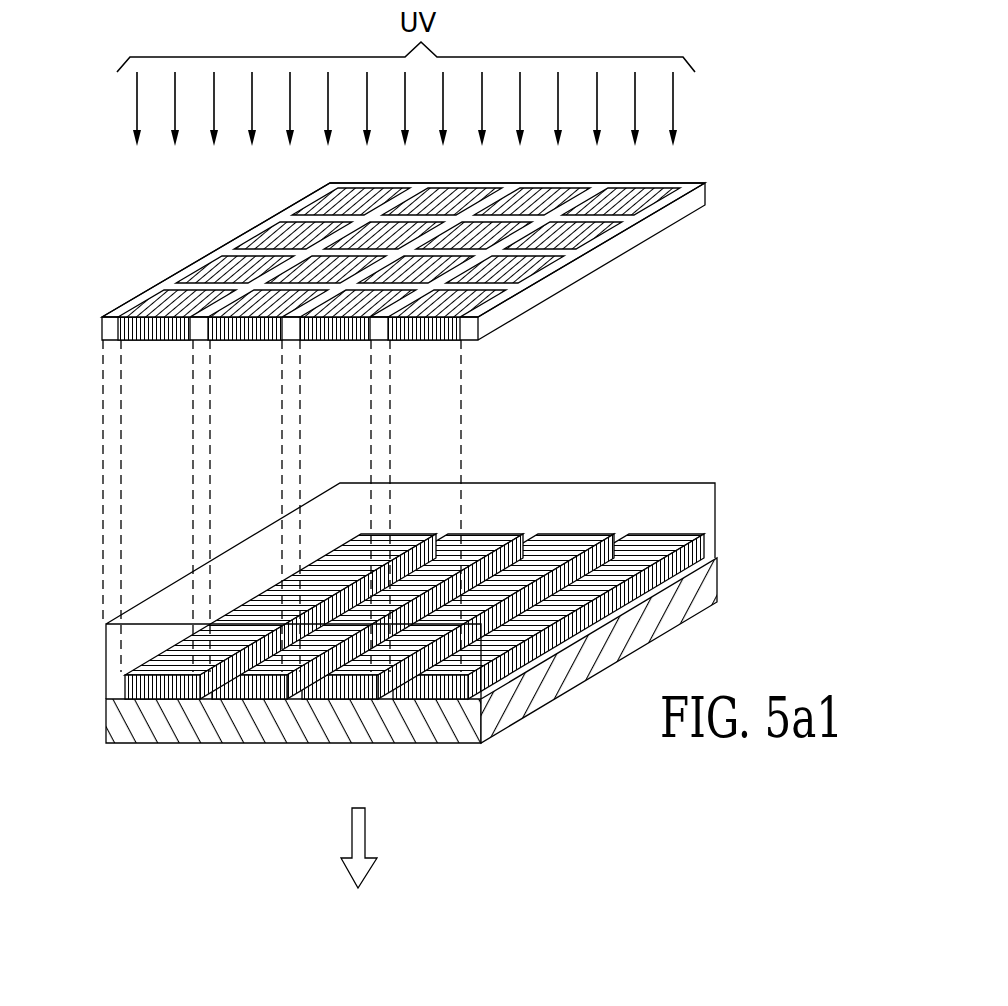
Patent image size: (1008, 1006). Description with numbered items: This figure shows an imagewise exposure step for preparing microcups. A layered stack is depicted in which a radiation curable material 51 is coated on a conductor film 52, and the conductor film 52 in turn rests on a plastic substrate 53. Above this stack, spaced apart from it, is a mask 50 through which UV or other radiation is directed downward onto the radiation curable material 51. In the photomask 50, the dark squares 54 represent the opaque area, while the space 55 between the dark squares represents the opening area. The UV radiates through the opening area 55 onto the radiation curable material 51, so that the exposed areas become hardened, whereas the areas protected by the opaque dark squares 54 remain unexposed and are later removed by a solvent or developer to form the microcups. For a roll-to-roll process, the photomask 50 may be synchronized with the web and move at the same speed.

The mask 50 is at (630, 238).
The radiation curable material 51 is at (110, 640).
The conductor film 52 is at (120, 682).
The plastic substrate 53 is at (115, 725).
The dark squares 54 is at (227, 270).
The space between the dark squares 55 is at (190, 288).